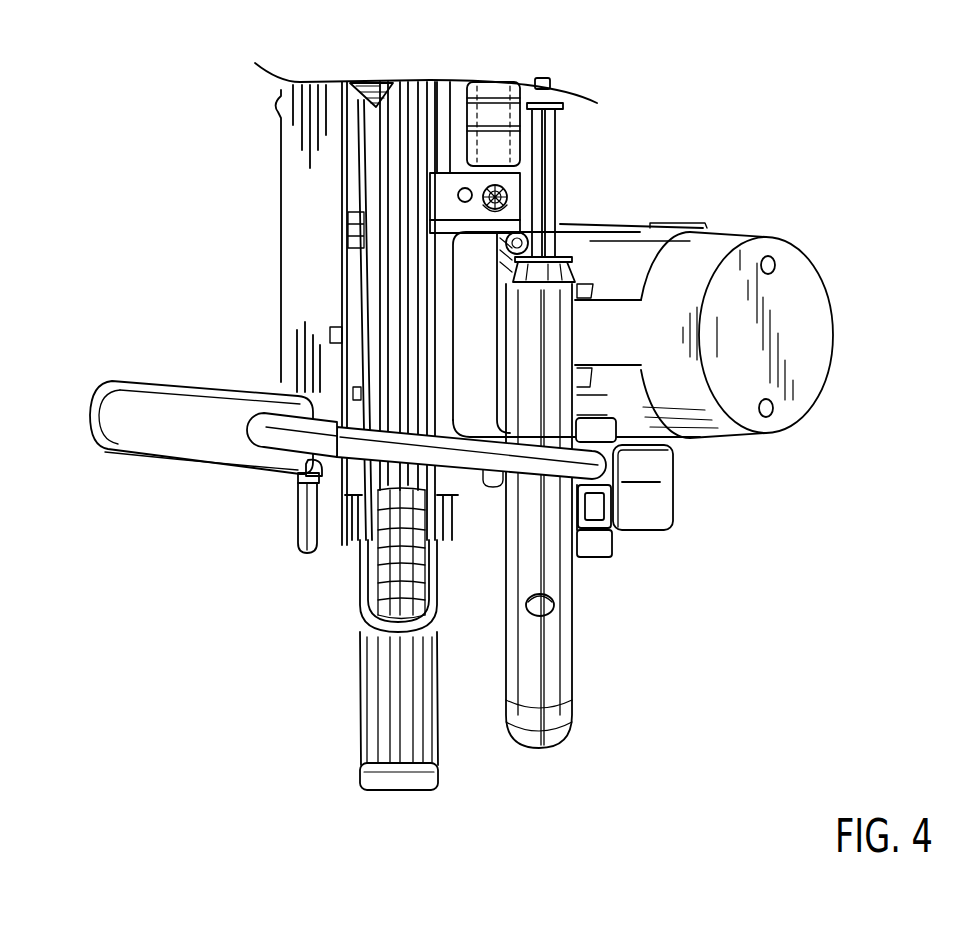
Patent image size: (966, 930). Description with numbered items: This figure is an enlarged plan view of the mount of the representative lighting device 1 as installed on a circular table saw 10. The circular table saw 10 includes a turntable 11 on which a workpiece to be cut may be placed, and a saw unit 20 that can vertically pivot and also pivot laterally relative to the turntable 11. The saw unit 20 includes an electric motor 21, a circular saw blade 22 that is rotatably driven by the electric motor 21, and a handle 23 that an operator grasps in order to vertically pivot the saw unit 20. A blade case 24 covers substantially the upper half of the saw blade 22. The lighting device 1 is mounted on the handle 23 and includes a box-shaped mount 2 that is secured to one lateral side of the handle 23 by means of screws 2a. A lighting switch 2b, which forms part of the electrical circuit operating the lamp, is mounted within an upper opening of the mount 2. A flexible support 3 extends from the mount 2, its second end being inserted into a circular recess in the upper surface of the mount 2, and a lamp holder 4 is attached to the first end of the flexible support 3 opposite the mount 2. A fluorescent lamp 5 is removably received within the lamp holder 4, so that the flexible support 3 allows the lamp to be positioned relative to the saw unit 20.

The lighting device 1 is at (659, 512).
The mount 2 is at (677, 487).
The screws 2a is at (620, 434).
The lighting switch 2b is at (595, 510).
The flexible support 3 is at (470, 458).
The lamp holder 4 is at (206, 433).
The fluorescent lamp 5 is at (177, 410).
The circular table saw 10 is at (162, 167).
The turntable 11 is at (305, 233).
The saw unit 20 is at (593, 163).
The electric motor 21 is at (790, 310).
The circular saw blade 22 is at (357, 557).
The handle 23 is at (558, 687).
The blade case 24 is at (364, 597).